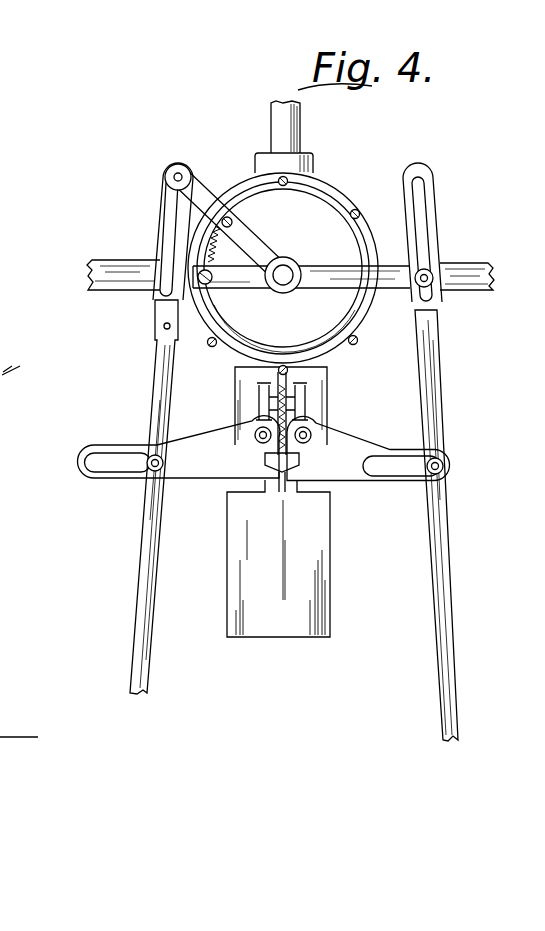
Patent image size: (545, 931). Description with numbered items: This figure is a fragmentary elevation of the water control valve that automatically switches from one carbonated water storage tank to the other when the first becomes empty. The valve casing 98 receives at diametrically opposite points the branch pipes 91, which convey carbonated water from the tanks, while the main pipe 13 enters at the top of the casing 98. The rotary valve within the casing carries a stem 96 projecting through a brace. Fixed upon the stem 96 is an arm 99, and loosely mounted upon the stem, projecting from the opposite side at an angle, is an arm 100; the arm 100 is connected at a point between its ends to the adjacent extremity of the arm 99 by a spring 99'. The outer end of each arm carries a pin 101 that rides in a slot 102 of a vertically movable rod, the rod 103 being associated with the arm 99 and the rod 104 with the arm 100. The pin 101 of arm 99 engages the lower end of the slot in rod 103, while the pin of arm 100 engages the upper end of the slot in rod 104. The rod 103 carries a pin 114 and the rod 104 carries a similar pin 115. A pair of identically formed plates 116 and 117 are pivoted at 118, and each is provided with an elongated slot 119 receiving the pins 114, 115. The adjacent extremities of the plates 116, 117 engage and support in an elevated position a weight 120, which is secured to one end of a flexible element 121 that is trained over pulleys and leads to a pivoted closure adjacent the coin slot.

The main pipe 13 is at (272, 119).
The branch pipe 91 is at (112, 268).
The stem 96 is at (291, 270).
The dial casing 98 is at (328, 188).
The arm 99 is at (301, 290).
The spring 99' is at (219, 292).
The arm 100 is at (242, 237).
The pin 101 is at (170, 167).
The slot 102 is at (180, 200).
The vertically movable rod 103 is at (437, 572).
The vertically movable rod 104 is at (143, 562).
The pin 114 is at (446, 457).
The pin 115 is at (152, 468).
The plate 116 is at (179, 447).
The plate 117 is at (368, 448).
The pivot 118 is at (261, 441).
The elongated slot 119 is at (123, 455).
The weight 120 is at (305, 572).
The flexible element 121 is at (300, 417).